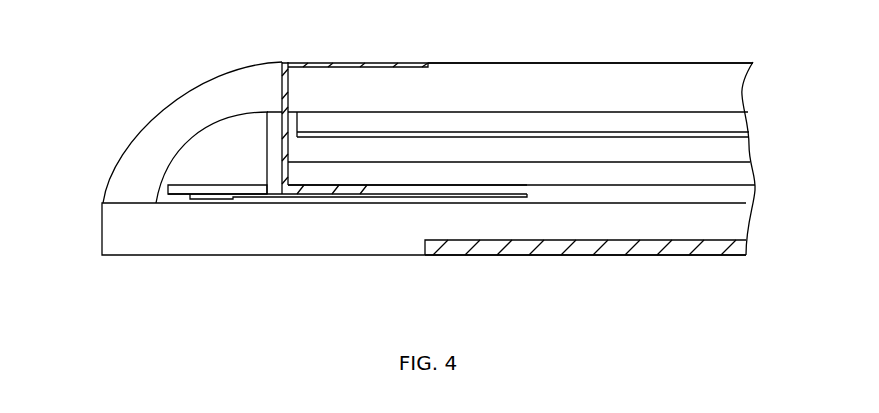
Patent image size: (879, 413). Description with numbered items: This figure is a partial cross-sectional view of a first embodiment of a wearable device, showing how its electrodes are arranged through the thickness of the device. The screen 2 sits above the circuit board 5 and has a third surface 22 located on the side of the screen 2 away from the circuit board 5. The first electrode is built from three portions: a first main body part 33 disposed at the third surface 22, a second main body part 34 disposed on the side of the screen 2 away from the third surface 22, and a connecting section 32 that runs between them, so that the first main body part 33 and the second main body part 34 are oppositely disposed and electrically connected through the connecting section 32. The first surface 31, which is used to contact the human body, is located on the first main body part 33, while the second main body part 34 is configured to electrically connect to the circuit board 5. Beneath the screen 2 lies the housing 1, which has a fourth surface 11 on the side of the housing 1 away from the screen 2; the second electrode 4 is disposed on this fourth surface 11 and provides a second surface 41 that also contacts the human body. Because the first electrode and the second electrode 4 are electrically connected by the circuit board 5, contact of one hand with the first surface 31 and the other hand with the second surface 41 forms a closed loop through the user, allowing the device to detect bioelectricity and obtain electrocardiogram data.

The housing 1 is at (79, 270).
The fourth surface 11 is at (230, 255).
The screen 2 is at (531, 82).
The third surface 22 is at (673, 62).
The first surface 31 is at (367, 63).
The connecting section 32 is at (286, 105).
The first main body part 33 is at (328, 63).
The second main body part 34 is at (347, 192).
The second electrode 4 is at (683, 252).
The second surface 41 is at (585, 257).
The circuit board 5 is at (262, 195).